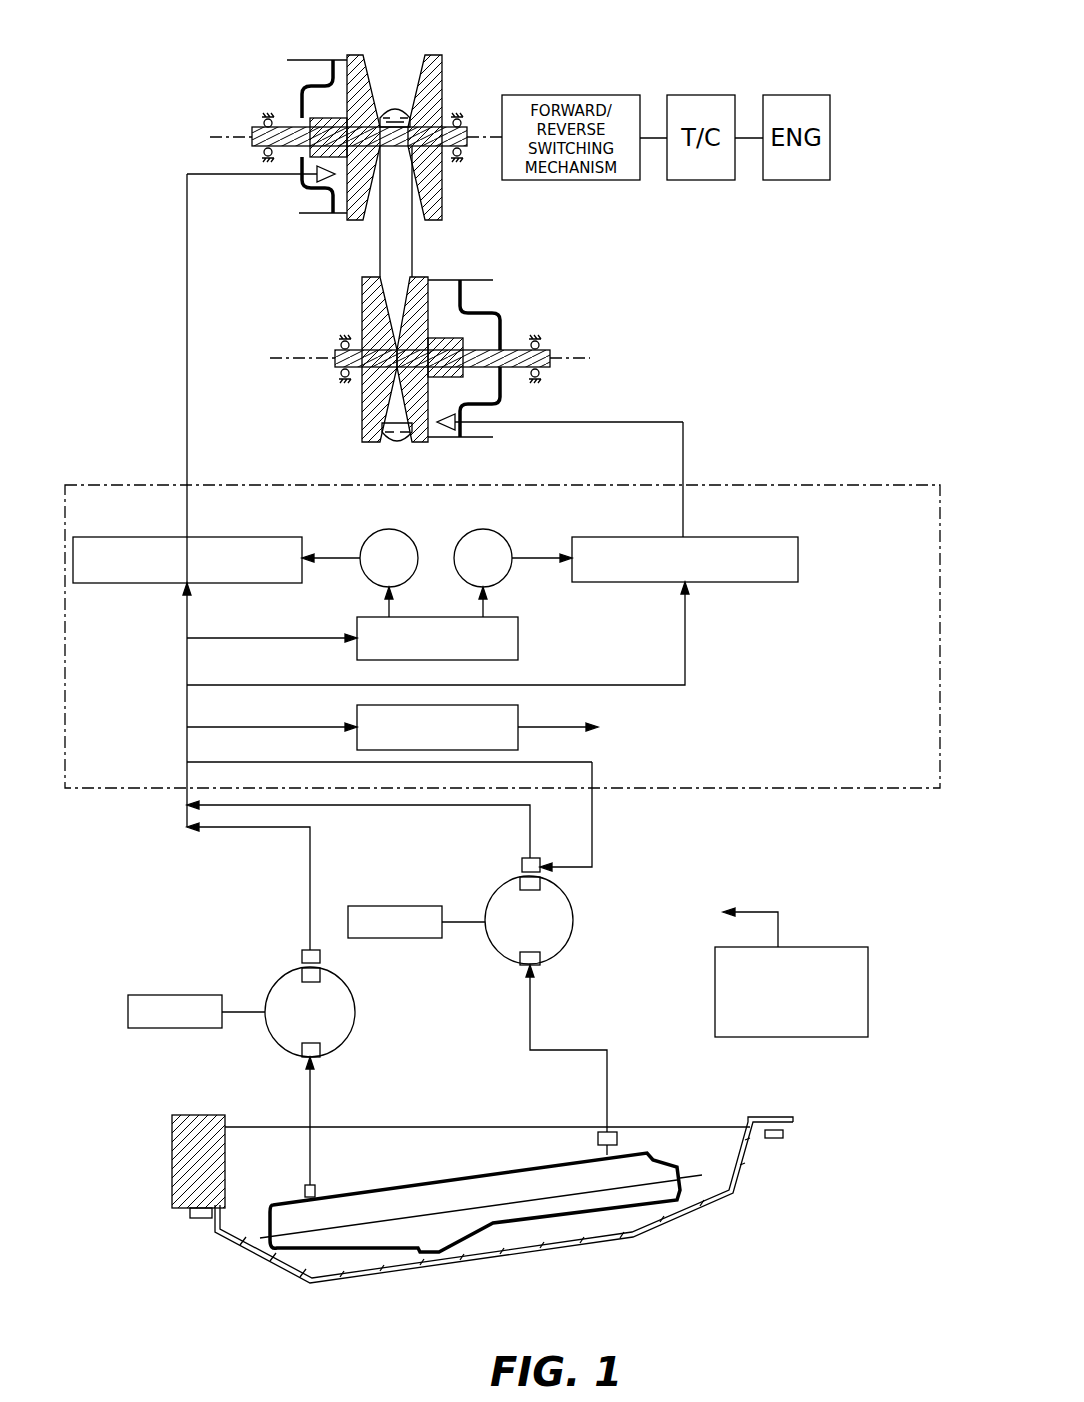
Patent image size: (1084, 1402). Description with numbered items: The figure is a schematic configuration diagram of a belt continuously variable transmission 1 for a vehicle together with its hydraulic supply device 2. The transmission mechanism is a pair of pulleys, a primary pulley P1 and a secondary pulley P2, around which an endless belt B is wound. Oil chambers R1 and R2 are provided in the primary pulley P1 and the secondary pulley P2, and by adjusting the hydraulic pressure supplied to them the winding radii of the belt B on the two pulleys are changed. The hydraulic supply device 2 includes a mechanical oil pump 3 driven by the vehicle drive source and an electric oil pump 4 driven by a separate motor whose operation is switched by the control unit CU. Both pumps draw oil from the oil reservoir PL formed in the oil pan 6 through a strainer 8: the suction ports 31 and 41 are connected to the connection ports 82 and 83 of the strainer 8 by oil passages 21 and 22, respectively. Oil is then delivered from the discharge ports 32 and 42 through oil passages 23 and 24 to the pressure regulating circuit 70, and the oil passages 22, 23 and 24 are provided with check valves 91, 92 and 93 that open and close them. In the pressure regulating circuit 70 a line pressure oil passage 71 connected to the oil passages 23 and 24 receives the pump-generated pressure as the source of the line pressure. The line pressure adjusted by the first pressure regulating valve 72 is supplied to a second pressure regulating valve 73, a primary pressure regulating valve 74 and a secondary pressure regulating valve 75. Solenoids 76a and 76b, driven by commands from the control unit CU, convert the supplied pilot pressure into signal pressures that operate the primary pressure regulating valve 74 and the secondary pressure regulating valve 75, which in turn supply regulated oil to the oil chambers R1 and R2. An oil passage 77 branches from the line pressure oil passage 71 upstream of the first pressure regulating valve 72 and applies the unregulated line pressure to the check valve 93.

The belt continuously variable transmission 1 is at (165, 142).
The primary pulley P1 is at (345, 50).
The oil chamber R1 is at (312, 102).
The endless belt B is at (413, 230).
The secondary pulley P2 is at (362, 405).
The oil chamber R2 is at (447, 318).
The pressure regulating circuit 70 is at (742, 486).
The line pressure oil passage 71 is at (187, 740).
The first pressure regulating valve 72 is at (520, 712).
The second pressure regulating valve 73 is at (520, 620).
The primary pressure regulating valve 74 is at (92, 537).
The secondary pressure regulating valve 75 is at (790, 537).
The solenoid 76a is at (366, 535).
The solenoid 76b is at (470, 535).
The oil passage 77 is at (592, 838).
The hydraulic supply device 2 is at (215, 878).
The mechanical oil pump 3 is at (350, 988).
The electric oil pump 4 is at (572, 888).
The oil passage 21 is at (308, 1100).
The oil passage 22 is at (560, 1050).
The oil passage 23 is at (310, 855).
The oil passage 24 is at (530, 812).
The suction port 31 is at (302, 1050).
The discharge port 32 is at (302, 975).
The suction port 41 is at (520, 958).
The discharge port 42 is at (520, 884).
The check valve 92 is at (302, 956).
The check valve 93 is at (522, 865).
The check valve 91 is at (598, 1138).
The oil pan 6 is at (745, 1160).
The strainer 8 is at (310, 1255).
The connection port 82 is at (305, 1190).
The connection port 83 is at (620, 1150).
The oil reservoir PL is at (358, 1125).
The control unit CU is at (860, 947).